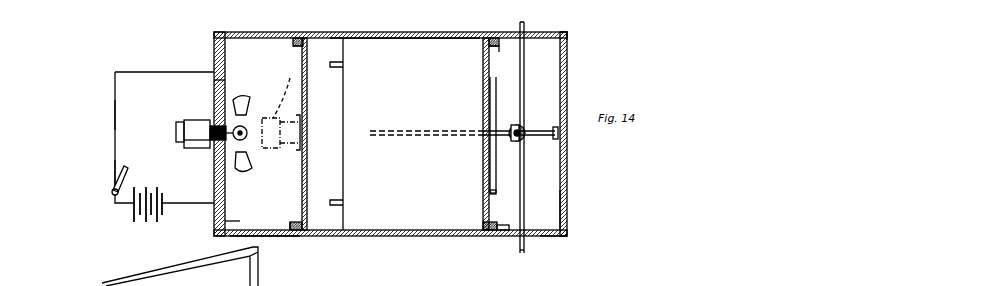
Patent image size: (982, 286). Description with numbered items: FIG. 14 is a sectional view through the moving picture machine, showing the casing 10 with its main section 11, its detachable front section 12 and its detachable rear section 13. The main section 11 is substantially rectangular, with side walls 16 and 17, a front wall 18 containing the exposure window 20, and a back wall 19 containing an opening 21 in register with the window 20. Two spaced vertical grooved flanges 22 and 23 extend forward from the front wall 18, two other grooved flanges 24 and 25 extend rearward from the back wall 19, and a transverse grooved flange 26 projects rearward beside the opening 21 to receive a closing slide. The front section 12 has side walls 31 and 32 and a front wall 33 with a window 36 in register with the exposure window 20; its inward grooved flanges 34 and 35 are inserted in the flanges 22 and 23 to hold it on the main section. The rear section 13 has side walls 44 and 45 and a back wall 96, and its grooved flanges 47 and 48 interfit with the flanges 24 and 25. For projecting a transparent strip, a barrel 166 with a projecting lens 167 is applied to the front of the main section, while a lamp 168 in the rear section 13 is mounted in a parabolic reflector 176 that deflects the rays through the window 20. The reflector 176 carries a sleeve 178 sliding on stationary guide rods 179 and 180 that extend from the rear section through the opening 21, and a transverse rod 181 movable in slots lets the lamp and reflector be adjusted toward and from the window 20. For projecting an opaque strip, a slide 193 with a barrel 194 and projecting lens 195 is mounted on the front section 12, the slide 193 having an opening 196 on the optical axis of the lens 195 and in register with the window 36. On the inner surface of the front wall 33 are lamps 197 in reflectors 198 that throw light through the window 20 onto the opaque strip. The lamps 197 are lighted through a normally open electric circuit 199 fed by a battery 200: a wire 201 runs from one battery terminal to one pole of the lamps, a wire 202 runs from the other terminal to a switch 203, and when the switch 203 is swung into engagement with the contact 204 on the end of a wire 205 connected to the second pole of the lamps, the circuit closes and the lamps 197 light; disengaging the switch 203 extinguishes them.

The casing 10 is at (567, 36).
The main section 11 is at (398, 32).
The front section 12 is at (258, 238).
The rear section 13 is at (568, 64).
The side wall 16 is at (410, 237).
The side wall 17 is at (436, 32).
The front wall 18 is at (308, 72).
The back wall 19 is at (483, 62).
The exposure window 20 is at (312, 120).
The opening 21 is at (488, 150).
The grooved flange 22 is at (299, 38).
The grooved flange 23 is at (293, 236).
The grooved flange 24 is at (492, 38).
The grooved flange 25 is at (490, 237).
The transverse grooved flange 26 is at (494, 194).
The side wall 31 is at (278, 238).
The side wall 32 is at (246, 33).
The front wall 33 is at (228, 221).
The grooved flange 34 is at (294, 222).
The grooved flange 35 is at (292, 45).
The window 36 is at (247, 138).
The side wall 44 is at (553, 238).
The side wall 45 is at (532, 35).
The grooved flange 47 is at (500, 226).
The grooved flange 48 is at (500, 48).
The end wall panel 96 is at (568, 205).
The barrel 166 is at (298, 148).
The projecting lens 167 is at (283, 91).
The lamp 168 is at (515, 130).
The reflector 176 is at (525, 140).
The sleeve 178 is at (528, 132).
The guide rod 179 is at (490, 172).
The guide rod 180 is at (553, 133).
The transverse rod 181 is at (522, 254).
The slide 193 is at (213, 85).
The barrel 194 is at (200, 148).
The projecting lens 195 is at (176, 126).
The opening 196 is at (212, 150).
The lamp 197 is at (246, 128).
The reflector 198 is at (247, 174).
The electric circuit 199 is at (115, 72).
The battery 200 is at (148, 215).
The wire 201 is at (193, 204).
The wire 202 is at (115, 202).
The switch 203 is at (112, 185).
The contact 204 is at (115, 168).
The wire 205 is at (115, 113).